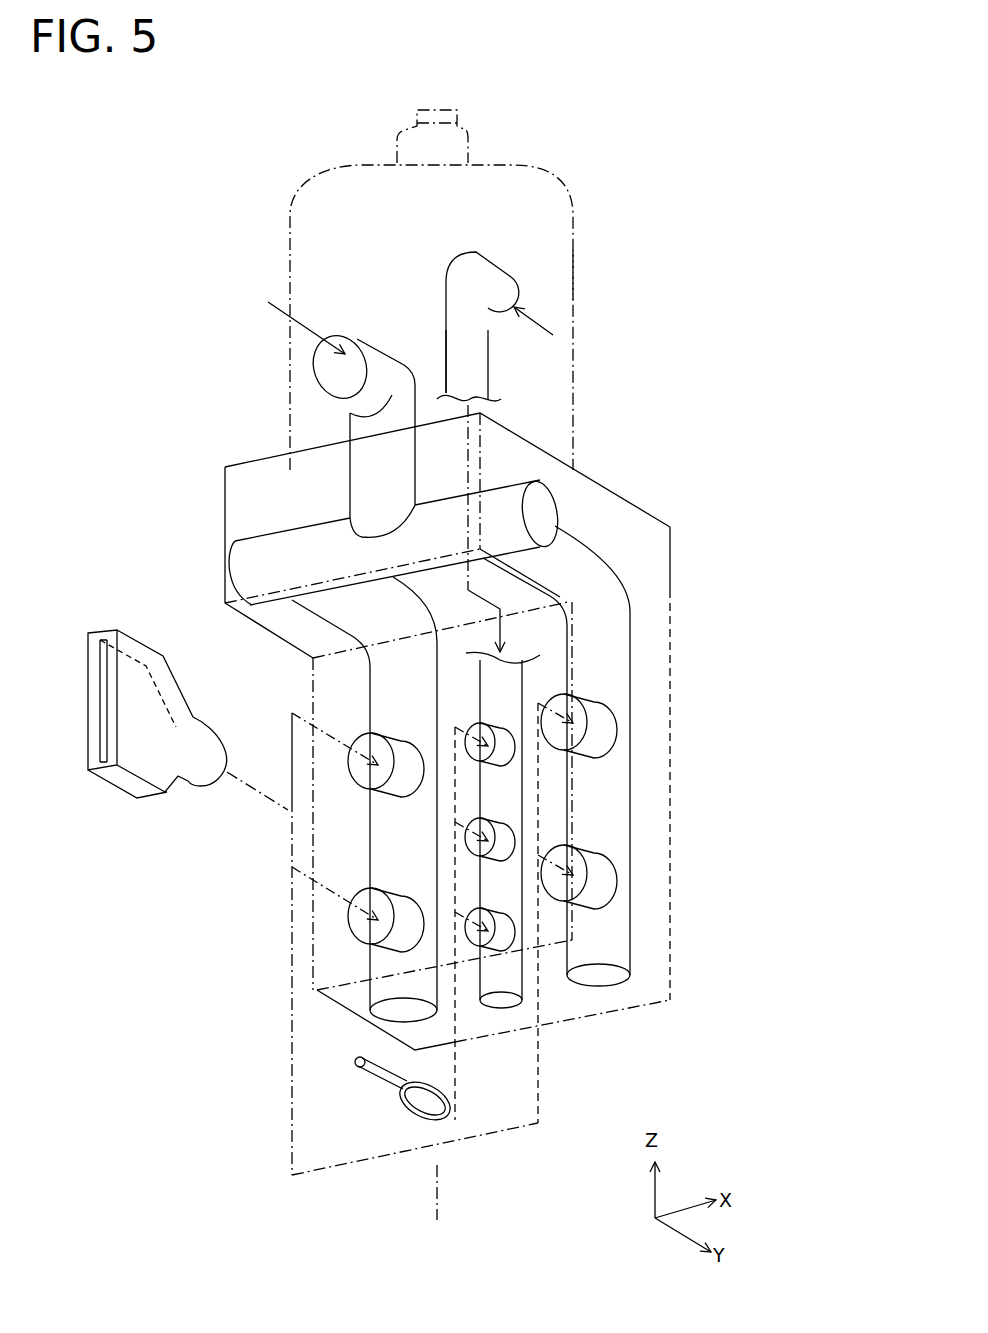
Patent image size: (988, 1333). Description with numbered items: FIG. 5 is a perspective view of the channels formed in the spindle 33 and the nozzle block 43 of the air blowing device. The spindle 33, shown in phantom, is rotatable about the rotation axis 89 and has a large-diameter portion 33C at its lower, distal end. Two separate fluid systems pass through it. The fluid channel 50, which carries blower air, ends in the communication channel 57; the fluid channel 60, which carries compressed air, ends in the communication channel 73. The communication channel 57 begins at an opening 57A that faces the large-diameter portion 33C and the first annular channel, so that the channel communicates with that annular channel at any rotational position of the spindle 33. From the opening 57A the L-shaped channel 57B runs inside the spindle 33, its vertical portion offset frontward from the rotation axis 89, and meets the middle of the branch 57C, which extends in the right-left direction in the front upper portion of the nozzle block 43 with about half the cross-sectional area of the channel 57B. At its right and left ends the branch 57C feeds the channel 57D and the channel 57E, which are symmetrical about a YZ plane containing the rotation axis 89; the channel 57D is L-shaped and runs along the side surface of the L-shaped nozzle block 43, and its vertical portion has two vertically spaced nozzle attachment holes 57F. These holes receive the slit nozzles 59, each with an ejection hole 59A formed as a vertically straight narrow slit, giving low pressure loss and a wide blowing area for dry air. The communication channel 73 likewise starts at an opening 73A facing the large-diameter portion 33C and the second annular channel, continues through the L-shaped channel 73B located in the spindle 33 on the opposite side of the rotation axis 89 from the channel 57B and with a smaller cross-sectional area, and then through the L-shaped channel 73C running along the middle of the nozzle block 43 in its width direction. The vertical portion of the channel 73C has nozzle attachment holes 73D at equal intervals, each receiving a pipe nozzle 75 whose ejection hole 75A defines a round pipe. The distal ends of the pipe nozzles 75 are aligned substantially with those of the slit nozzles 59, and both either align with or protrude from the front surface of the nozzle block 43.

The spindle 33 is at (578, 238).
The large-diameter portion 33C is at (575, 268).
The fluid channel 60 is at (498, 258).
The communication channel 73 is at (598, 680).
The opening 73A is at (519, 296).
The channel 73B is at (490, 383).
The channel 73C is at (502, 996).
The nozzle attachment holes 73D is at (509, 752).
The fluid channel 50 is at (326, 420).
The communication channel 57 is at (456, 646).
The opening 57A is at (314, 356).
The channel 57B is at (389, 367).
The branch 57C is at (268, 540).
The channel 57D is at (633, 630).
The channel 57E is at (371, 690).
The nozzle attachment holes 57F is at (612, 738).
The nozzle block 43 is at (674, 581).
The slit nozzle 59 is at (163, 698).
The ejection hole 59A is at (100, 682).
The pipe nozzle 75 is at (382, 1076).
The ejection hole 75A is at (357, 1058).
The rotation axis 89 is at (437, 1207).